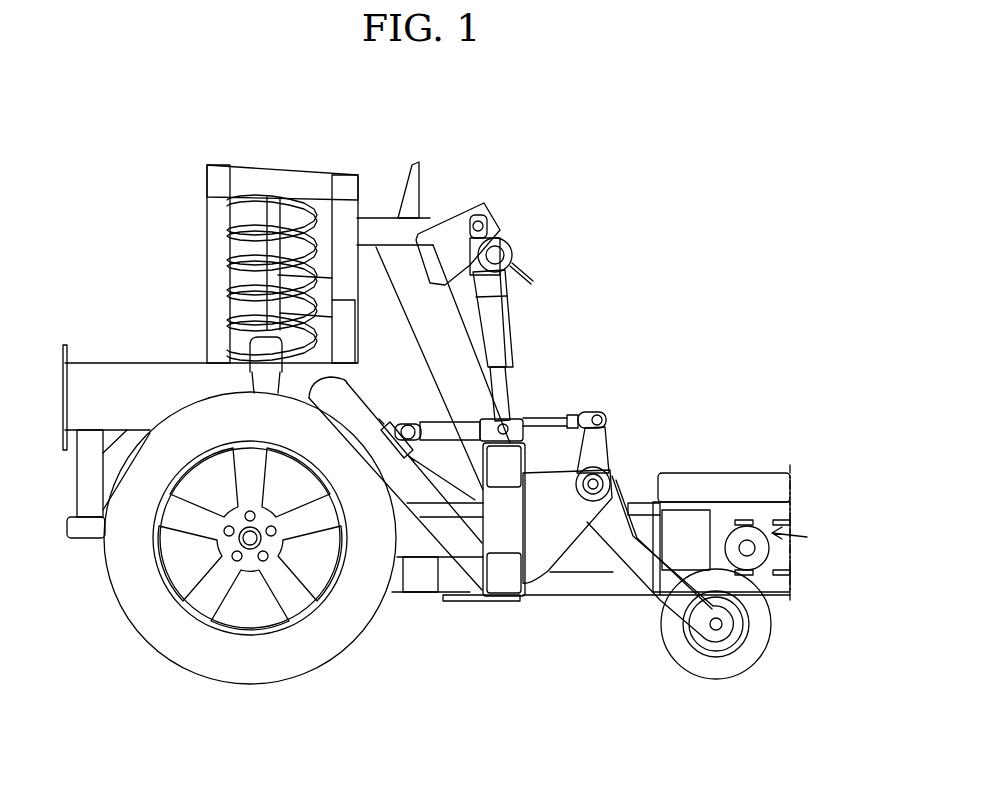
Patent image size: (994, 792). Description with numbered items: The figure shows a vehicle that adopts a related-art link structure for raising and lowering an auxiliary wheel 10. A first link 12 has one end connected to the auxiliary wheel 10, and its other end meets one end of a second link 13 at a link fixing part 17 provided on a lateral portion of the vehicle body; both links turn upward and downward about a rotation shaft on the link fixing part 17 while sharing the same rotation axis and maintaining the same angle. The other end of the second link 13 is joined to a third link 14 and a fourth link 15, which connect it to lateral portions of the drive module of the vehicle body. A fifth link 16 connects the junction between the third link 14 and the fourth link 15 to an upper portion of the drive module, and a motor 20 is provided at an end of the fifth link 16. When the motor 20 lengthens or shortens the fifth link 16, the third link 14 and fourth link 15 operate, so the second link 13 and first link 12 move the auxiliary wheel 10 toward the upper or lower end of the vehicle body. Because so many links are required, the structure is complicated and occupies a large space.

The auxiliary wheel 10 is at (720, 668).
The first link 12 is at (643, 570).
The second link 13 is at (590, 448).
The third link 14 is at (550, 417).
The fourth link 15 is at (470, 426).
The fifth link 16 is at (493, 328).
The link fixing part 17 is at (550, 543).
The motor 20 is at (511, 246).